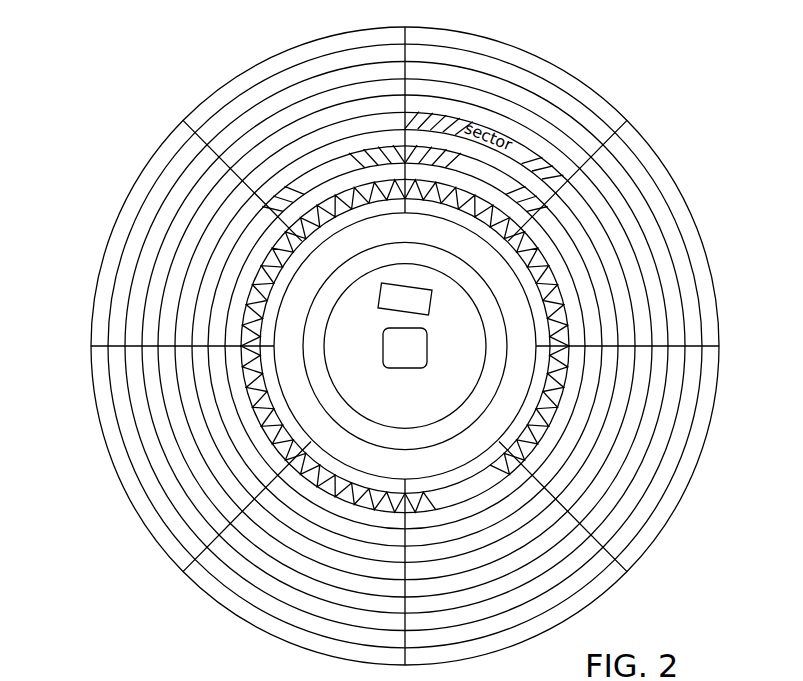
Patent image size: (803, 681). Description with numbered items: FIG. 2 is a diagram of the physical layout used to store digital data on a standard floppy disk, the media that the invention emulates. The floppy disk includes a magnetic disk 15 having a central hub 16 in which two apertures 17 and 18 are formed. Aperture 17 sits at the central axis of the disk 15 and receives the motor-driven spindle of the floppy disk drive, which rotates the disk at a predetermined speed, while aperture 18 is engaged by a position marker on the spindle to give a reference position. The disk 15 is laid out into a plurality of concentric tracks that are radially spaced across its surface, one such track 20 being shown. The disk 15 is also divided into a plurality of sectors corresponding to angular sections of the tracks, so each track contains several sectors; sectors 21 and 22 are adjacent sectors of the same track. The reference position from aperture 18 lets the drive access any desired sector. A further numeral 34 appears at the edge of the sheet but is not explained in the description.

The optical disc 15 is at (685, 197).
The center hub region 16 is at (327, 363).
The center hole 17 is at (392, 368).
The identification area 18 is at (430, 305).
The track 20 is at (477, 500).
The sector 21 is at (283, 197).
The sector 22 is at (528, 198).
The reference numeral 34 is at (170, 674).